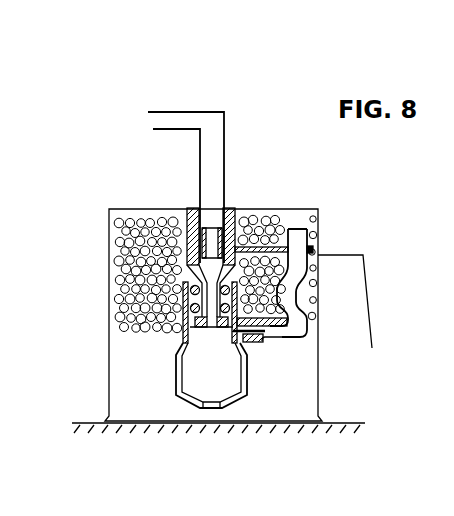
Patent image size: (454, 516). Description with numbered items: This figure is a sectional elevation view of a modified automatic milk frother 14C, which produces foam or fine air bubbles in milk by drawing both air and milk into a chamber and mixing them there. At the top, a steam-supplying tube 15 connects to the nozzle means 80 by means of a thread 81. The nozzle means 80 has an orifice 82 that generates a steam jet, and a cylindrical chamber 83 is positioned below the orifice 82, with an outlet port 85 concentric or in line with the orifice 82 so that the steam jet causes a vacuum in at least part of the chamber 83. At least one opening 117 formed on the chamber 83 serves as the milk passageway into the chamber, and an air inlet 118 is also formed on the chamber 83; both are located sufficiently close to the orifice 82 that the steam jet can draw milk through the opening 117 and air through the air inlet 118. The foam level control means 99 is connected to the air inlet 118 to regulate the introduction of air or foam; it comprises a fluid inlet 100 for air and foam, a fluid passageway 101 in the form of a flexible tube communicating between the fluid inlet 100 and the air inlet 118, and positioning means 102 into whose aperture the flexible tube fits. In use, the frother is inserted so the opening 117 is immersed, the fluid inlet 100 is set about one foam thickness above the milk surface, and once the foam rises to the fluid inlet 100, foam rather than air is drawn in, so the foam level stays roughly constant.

The modified automatic milk frother 14C is at (254, 90).
The steam-supplying tube 15 is at (193, 112).
The nozzle means 80 is at (187, 209).
The thread 81 is at (226, 208).
The orifice 82 is at (207, 326).
The cylindrical chamber 83 is at (146, 375).
The outlet port 85 is at (208, 410).
The foam level control means 99 is at (322, 340).
The fluid inlet 100 is at (298, 229).
The fluid passageway 101 is at (292, 338).
The positioning means 102 is at (320, 236).
The opening 117 is at (198, 320).
The air inlet 118 is at (267, 335).